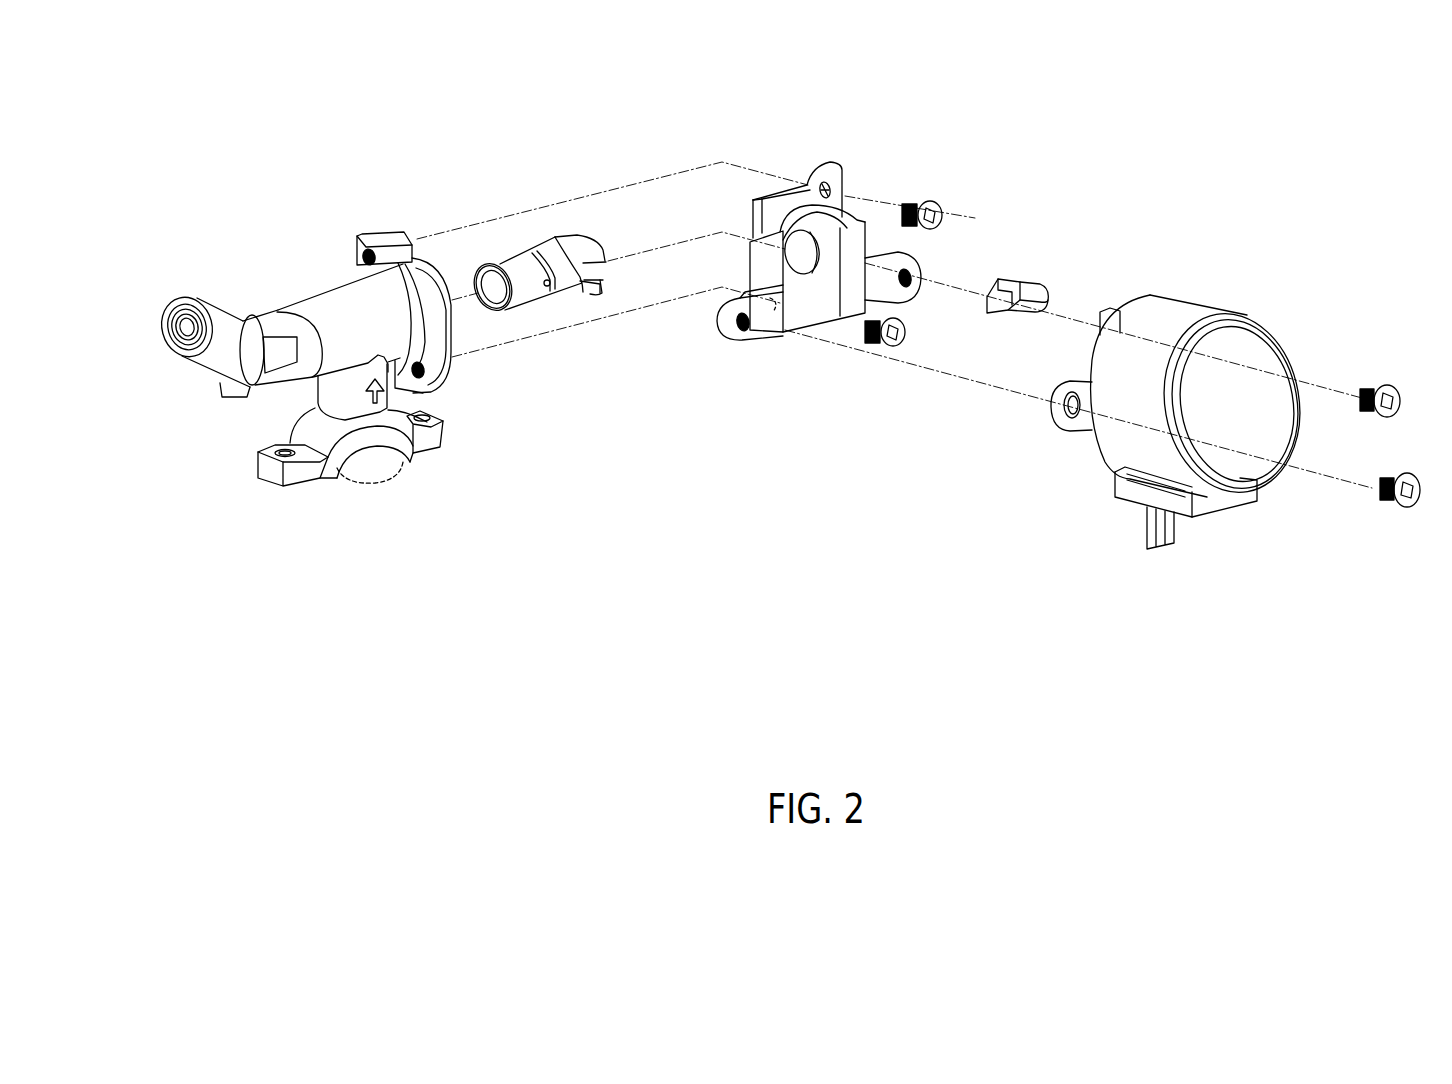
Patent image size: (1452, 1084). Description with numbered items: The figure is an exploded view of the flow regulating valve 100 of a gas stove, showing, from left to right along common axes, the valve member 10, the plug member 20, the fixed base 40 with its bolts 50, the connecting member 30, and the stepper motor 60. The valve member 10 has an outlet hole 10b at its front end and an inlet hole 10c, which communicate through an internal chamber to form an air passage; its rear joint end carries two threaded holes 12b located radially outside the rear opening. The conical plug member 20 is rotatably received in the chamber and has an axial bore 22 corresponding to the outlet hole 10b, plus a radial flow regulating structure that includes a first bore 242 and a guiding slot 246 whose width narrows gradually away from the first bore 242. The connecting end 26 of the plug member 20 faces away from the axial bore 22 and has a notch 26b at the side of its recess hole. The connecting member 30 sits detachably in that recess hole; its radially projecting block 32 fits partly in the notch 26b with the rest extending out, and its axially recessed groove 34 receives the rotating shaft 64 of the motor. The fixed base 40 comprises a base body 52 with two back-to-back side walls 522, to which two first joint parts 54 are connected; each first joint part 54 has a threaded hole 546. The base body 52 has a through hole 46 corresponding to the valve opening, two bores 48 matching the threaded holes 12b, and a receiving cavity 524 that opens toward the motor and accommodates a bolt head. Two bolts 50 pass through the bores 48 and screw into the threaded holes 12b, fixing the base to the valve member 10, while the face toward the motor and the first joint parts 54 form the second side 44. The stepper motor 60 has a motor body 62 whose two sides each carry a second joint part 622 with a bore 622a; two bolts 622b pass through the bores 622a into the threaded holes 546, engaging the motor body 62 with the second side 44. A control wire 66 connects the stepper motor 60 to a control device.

The flow regulating valve 100 is at (1175, 150).
The valve member 10 is at (295, 288).
The outlet hole 10b is at (168, 300).
The inlet hole 10c is at (350, 480).
The threaded holes 12b is at (363, 248).
The plug member 20 is at (548, 231).
The axial bore 22 is at (490, 290).
The first bore 242 is at (549, 288).
The guiding slot 246 is at (585, 272).
The connecting end 26 is at (587, 247).
The notch 26b is at (597, 268).
The fixed base 40 is at (837, 160).
The side walls 522 is at (765, 268).
The base body 52 is at (780, 210).
The through hole 46 is at (805, 240).
The bores 48 is at (843, 178).
The receiving cavity 524 is at (833, 283).
The first joint parts 54 is at (722, 338).
The threaded hole 546 is at (745, 331).
The second side 44 is at (765, 333).
The bolts 50 is at (945, 212).
The connecting member 30 is at (1046, 290).
The block 32 is at (1000, 308).
The groove 34 is at (1018, 286).
The stepper motor 60 is at (1279, 316).
The motor body 62 is at (1176, 306).
The rotating shaft 64 is at (1112, 320).
The second joint parts 622 is at (1076, 435).
The bore 622a is at (1058, 406).
The bolts 622b is at (1386, 388).
The control wire 66 is at (1158, 548).